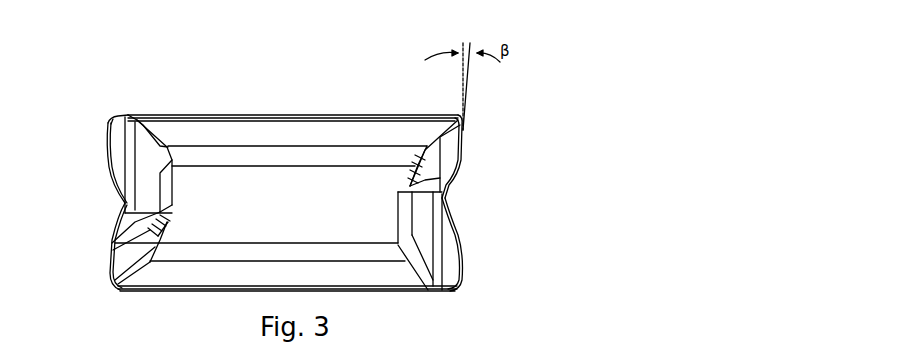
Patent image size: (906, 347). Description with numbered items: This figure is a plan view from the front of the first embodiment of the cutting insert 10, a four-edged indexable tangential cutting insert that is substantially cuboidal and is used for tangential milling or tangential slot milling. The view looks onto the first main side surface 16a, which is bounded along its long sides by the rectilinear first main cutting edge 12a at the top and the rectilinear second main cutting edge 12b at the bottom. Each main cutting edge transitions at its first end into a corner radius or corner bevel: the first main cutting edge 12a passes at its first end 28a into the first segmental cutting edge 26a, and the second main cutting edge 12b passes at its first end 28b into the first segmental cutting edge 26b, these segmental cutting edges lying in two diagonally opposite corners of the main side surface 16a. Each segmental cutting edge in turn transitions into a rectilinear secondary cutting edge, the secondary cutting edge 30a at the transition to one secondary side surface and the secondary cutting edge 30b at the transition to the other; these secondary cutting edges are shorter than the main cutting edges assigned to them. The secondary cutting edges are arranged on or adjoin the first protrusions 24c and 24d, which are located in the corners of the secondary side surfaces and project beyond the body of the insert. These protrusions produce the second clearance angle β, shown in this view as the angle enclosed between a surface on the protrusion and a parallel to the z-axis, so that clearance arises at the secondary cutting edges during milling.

The cutting insert 10 is at (522, 100).
The first main cutting edge 12a is at (237, 115).
The second main cutting edge 12b is at (210, 291).
The first main side surface 16a is at (336, 233).
The third first protrusion 24c is at (450, 259).
The fourth first protrusion 24d is at (118, 135).
The first segmental cutting edge 26a is at (460, 116).
The second first segmental cutting edge 26b is at (113, 288).
The first end of the first main cutting edge 28a is at (448, 115).
The first end of the second main cutting edge 28b is at (122, 292).
The first secondary cutting edge 30a is at (465, 150).
The second secondary cutting edge 30b is at (110, 253).